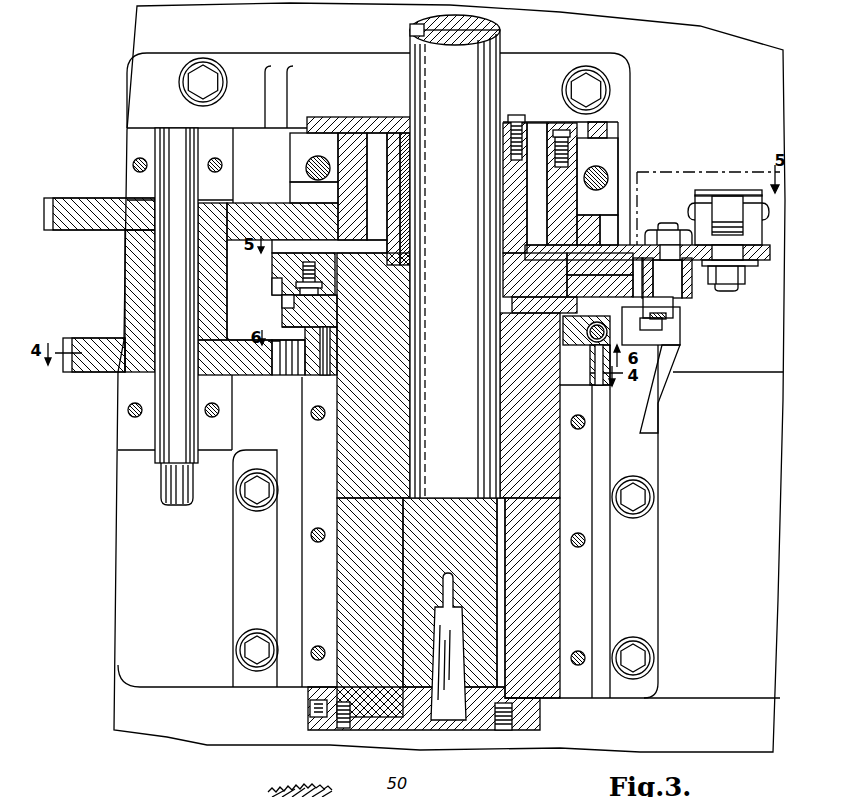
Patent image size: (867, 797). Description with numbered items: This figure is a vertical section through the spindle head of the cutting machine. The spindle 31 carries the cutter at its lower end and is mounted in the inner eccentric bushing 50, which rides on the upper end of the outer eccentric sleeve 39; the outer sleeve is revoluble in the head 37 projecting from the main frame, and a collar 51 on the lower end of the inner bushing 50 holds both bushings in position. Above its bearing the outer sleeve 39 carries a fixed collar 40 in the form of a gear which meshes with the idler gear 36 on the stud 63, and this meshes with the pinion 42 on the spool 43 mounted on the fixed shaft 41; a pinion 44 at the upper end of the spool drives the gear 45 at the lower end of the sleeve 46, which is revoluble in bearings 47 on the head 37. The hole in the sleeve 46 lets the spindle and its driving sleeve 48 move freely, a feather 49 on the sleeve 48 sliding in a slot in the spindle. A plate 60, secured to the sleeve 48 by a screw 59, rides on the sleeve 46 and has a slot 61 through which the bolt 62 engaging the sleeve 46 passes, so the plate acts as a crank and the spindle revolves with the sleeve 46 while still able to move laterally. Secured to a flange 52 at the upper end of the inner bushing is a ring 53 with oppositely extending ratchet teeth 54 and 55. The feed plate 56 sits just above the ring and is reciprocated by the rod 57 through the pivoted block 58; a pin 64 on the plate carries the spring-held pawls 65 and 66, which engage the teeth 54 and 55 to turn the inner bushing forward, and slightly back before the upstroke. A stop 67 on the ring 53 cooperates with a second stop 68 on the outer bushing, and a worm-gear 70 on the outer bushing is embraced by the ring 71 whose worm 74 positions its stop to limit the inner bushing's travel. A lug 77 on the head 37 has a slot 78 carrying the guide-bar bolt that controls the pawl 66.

The spindle 31 is at (455, 256).
The idler gear 36 is at (268, 792).
The head 37 is at (255, 568).
The outer eccentric sleeve 39 is at (530, 605).
The fixed collar 40 is at (590, 388).
The fixed shaft 41 is at (167, 437).
The pinion 42 is at (92, 366).
The spool 43 is at (140, 286).
The pinion 44 is at (85, 222).
The gear 45 is at (345, 188).
The sleeve 46 is at (353, 184).
The bearings 47 is at (454, 174).
The driving sleeve 48 is at (393, 190).
The feather 49 is at (405, 162).
The inner eccentric bushing 50 is at (383, 478).
The collar 51 is at (316, 713).
The flange 52 is at (535, 275).
The ring 53 is at (272, 272).
The ratchet teeth 54 is at (635, 263).
The ratchet teeth 55 is at (633, 283).
The feed plate 56 is at (763, 262).
The rod 57 is at (729, 200).
The block 58 is at (748, 239).
The screw 59 is at (519, 118).
The plate 60 is at (376, 121).
The slot 61 is at (536, 132).
The bolt 62 is at (562, 183).
The stud 63 is at (330, 793).
The pin 64 is at (667, 271).
The pawl 65 is at (692, 262).
The pawl 66 is at (692, 276).
The stop 67 is at (296, 285).
The stop 68 is at (544, 305).
The worm-gear 70 is at (318, 346).
The ring 71 is at (290, 316).
The worm 74 is at (607, 333).
The lug 77 is at (678, 345).
The slot 78 is at (663, 325).